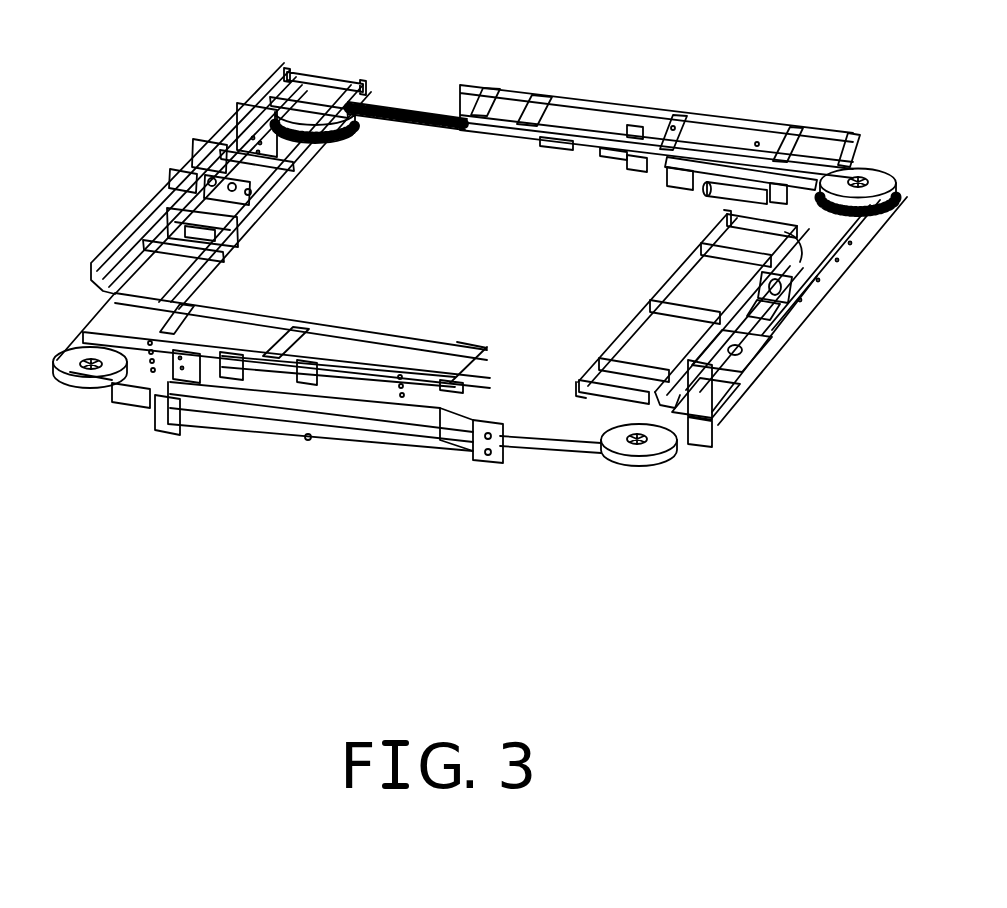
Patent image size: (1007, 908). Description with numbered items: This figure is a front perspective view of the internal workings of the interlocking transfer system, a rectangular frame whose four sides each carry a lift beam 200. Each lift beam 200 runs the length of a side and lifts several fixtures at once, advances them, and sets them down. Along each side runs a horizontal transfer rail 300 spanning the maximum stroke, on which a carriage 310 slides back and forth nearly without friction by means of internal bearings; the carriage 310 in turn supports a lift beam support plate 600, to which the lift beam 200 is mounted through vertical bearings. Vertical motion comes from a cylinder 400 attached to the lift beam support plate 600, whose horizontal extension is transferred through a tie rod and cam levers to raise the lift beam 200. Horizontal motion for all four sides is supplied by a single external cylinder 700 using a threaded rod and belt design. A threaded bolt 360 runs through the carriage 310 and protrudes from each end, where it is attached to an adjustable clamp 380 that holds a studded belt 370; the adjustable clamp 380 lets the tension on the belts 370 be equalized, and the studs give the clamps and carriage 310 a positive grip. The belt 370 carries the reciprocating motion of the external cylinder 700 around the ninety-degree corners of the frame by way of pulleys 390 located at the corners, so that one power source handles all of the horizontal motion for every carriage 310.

The lift beam 200 is at (413, 387).
The transfer rail 300 is at (843, 258).
The carriage 310 is at (763, 327).
The threaded bolt 360 is at (158, 407).
The belt 370 is at (390, 103).
The adjustable clamp 380 is at (122, 395).
The pulley 390 is at (878, 173).
The cylinder 400 is at (727, 413).
The lift beam support plate 600 is at (778, 293).
The external cylinder 700 is at (333, 430).